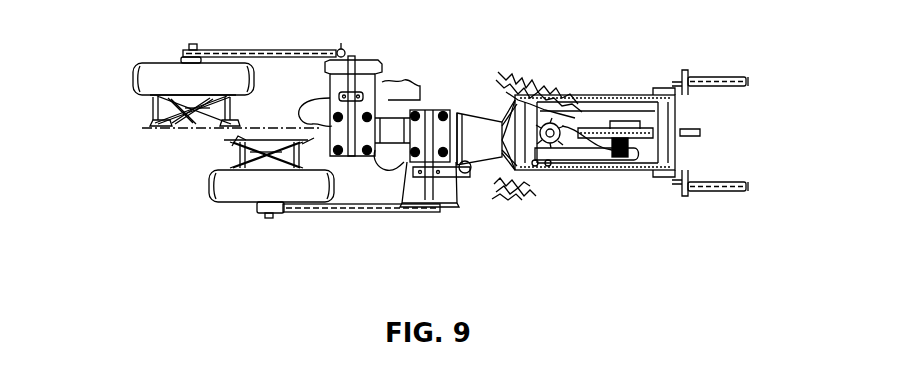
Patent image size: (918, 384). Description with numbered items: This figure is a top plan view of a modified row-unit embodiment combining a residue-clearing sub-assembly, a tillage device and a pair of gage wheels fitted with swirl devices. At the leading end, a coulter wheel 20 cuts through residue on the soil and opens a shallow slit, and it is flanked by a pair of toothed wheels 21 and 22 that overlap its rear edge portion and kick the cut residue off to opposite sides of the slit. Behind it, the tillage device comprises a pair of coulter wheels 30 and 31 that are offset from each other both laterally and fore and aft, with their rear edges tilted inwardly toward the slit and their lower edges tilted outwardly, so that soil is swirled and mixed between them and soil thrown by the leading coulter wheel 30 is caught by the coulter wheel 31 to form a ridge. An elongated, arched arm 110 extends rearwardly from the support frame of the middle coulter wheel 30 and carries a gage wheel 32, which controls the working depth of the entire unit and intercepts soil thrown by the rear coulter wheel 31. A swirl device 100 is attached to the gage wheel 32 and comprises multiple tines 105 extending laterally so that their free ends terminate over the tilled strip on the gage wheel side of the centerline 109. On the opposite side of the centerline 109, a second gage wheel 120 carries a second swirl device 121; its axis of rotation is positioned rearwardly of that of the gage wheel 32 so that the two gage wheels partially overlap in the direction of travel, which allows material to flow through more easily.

The coulter wheel 20 is at (690, 130).
The toothed wheel 21 is at (520, 196).
The toothed wheel 22 is at (518, 76).
The coulter wheel 30 is at (470, 182).
The coulter wheel 31 is at (390, 80).
The gage wheel 32 is at (228, 190).
The swirl device 100 is at (208, 156).
The tine 105 is at (257, 137).
The centerline 109 is at (158, 128).
The arched arm 110 is at (352, 212).
The second gage wheel 120 is at (145, 76).
The second swirl device 121 is at (136, 120).